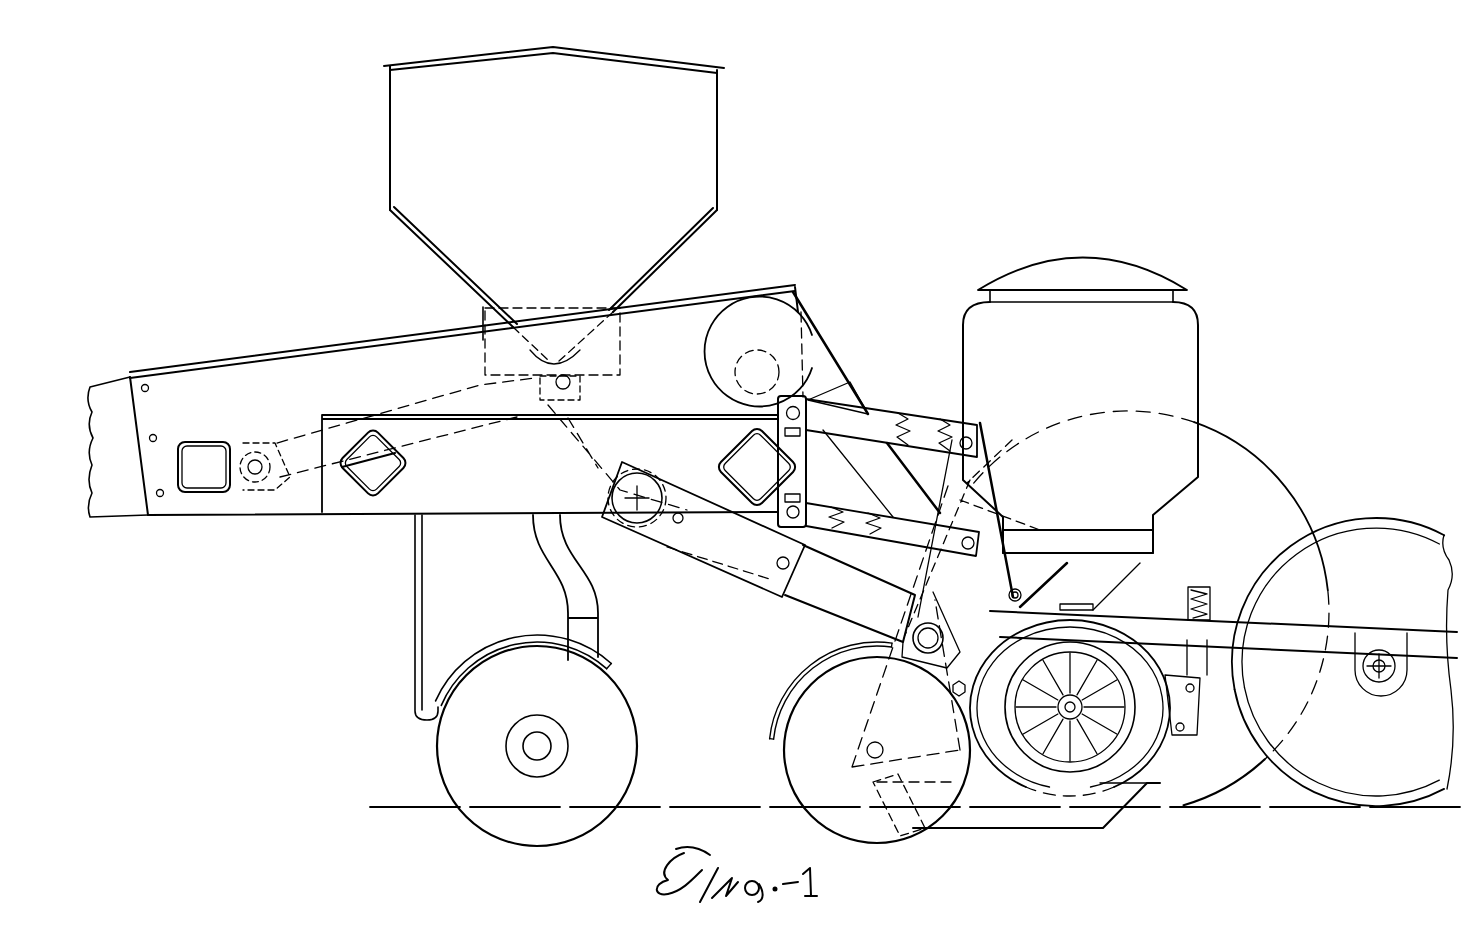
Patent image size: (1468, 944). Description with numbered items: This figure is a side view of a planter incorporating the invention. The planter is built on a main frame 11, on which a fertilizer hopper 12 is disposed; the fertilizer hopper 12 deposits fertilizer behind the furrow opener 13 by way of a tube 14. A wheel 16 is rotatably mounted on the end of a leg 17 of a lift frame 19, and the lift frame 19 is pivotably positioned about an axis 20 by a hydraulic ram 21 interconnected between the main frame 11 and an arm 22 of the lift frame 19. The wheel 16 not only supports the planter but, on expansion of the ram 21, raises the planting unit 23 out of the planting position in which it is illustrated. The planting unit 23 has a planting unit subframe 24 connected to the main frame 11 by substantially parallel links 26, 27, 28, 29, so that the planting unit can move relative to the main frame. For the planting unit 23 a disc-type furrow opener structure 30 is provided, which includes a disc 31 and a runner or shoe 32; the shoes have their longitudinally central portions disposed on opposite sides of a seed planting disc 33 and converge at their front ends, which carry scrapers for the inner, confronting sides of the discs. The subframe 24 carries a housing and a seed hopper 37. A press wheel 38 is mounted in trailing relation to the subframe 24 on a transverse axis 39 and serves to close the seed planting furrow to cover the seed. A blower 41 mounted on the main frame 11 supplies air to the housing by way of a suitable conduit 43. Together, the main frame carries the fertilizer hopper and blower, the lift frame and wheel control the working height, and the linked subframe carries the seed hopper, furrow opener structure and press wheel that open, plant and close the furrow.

The main frame 11 is at (277, 362).
The fertilizer hopper 12 is at (705, 178).
The furrow opener 13 is at (623, 718).
The tube 14 is at (590, 605).
The wheel 16 is at (1275, 483).
The leg 17 is at (840, 610).
The lift frame 19 is at (712, 580).
The axis 20 is at (610, 490).
The hydraulic ram 21 is at (427, 398).
The arm 22 is at (637, 410).
The planting unit 23 is at (1205, 418).
The planting unit subframe 24 is at (987, 480).
The parallel link 26 is at (868, 412).
The parallel link 27 is at (815, 500).
The parallel link 28 is at (920, 425).
The parallel link 29 is at (855, 535).
The disc-type furrow opener structure 30 is at (765, 780).
The disc 31 is at (795, 705).
The runner or shoe 32 is at (975, 820).
The seed planting disc 33 is at (1140, 755).
The seed hopper 37 is at (1190, 362).
The press wheel 38 is at (1403, 523).
The transverse axis 39 is at (1385, 680).
The blower 41 is at (820, 345).
The conduit 43 is at (882, 498).